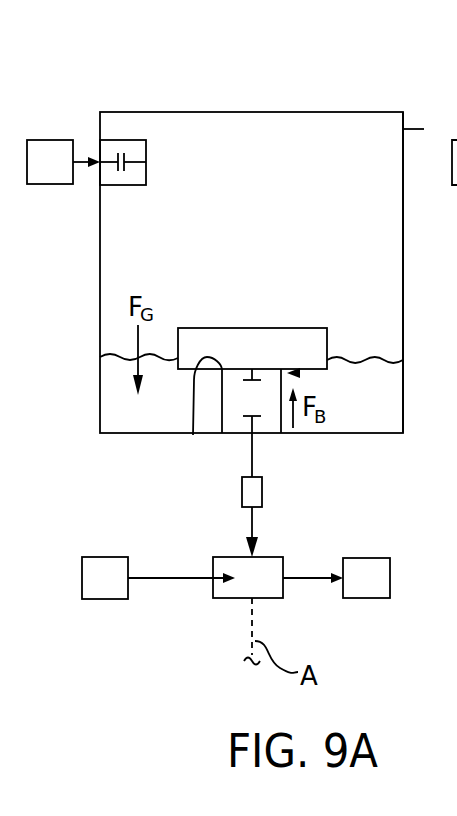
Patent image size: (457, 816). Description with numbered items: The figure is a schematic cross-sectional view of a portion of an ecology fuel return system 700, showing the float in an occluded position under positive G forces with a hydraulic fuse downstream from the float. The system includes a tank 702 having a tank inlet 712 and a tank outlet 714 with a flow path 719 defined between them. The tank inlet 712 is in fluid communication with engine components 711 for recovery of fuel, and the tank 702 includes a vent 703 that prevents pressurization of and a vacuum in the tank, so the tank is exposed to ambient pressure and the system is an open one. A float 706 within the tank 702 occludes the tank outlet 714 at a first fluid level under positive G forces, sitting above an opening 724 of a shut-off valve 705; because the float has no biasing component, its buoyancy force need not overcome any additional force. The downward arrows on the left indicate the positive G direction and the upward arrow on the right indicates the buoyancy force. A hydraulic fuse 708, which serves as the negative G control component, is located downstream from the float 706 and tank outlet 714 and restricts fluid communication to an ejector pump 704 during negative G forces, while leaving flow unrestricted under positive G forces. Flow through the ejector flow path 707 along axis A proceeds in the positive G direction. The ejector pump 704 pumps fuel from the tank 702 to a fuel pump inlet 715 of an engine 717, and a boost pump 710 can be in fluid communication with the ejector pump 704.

The ecology fuel return system 700 is at (278, 286).
The tank 702 is at (403, 308).
The vent 703 is at (424, 128).
The ejector pump 704 is at (279, 596).
The shut-off valve 705 is at (296, 373).
The float 706 is at (271, 361).
The ejector flow path 707 is at (252, 526).
The hydraulic fuse 708 is at (262, 492).
The boost pump 710 is at (124, 596).
The engine components 711 is at (69, 179).
The tank inlet 712 is at (100, 162).
The tank outlet 714 is at (281, 433).
The fuel pump inlet 715 is at (343, 582).
The engine 717 is at (385, 596).
The flow path 719 is at (228, 208).
The opening 724 is at (193, 435).